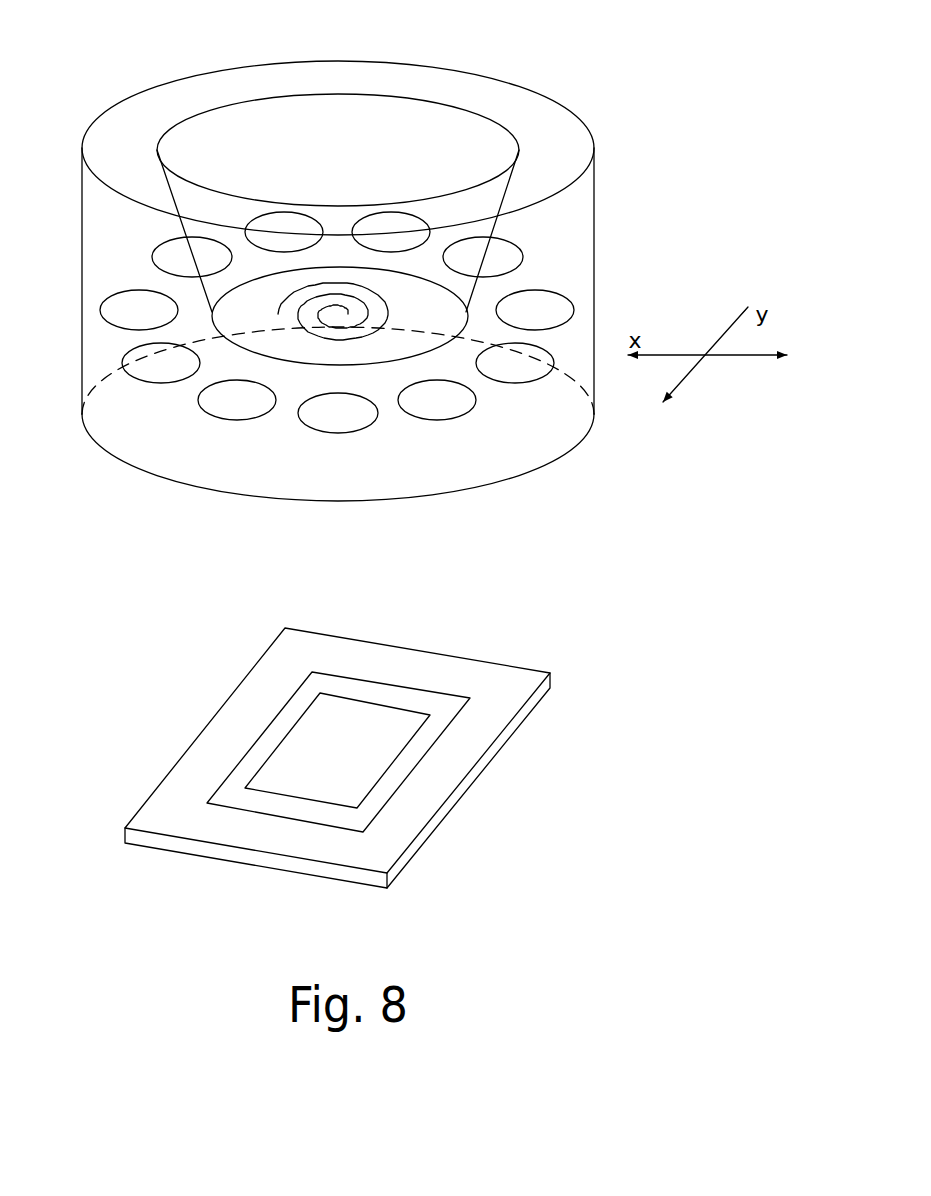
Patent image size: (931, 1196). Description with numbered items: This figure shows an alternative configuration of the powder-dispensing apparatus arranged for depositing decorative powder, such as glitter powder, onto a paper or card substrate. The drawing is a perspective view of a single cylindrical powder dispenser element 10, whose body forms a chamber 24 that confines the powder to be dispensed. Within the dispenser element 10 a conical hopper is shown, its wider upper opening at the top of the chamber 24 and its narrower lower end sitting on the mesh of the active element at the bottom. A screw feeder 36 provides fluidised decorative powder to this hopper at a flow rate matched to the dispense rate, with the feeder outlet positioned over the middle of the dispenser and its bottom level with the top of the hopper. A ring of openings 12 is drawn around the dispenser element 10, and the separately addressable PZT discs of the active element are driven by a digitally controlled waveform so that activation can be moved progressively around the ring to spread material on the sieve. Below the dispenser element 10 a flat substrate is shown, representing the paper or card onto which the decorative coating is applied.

The powder dispenser element 10 is at (354, 260).
The through holes 12 is at (342, 431).
The chamber 24 is at (338, 150).
The screw feeder 36 is at (256, 142).